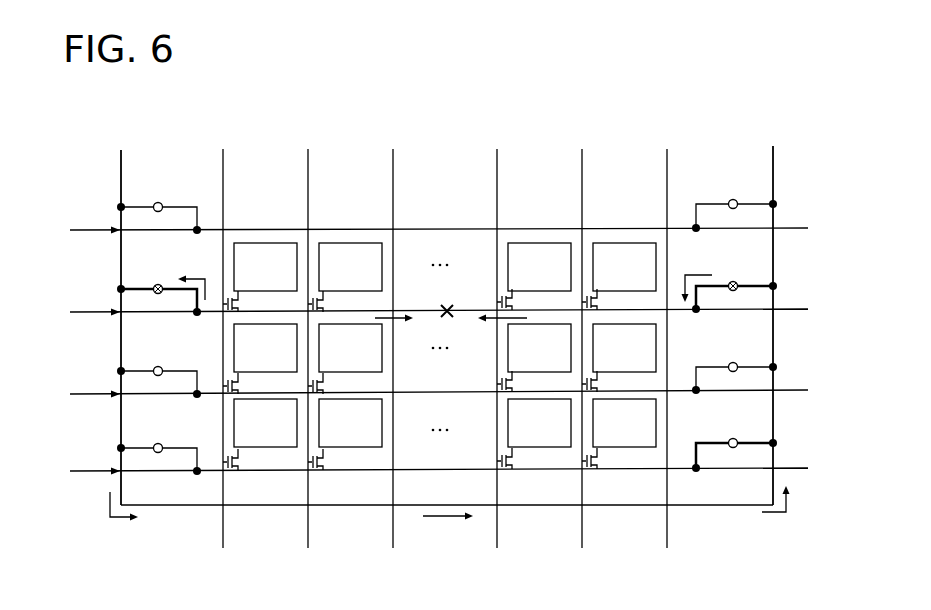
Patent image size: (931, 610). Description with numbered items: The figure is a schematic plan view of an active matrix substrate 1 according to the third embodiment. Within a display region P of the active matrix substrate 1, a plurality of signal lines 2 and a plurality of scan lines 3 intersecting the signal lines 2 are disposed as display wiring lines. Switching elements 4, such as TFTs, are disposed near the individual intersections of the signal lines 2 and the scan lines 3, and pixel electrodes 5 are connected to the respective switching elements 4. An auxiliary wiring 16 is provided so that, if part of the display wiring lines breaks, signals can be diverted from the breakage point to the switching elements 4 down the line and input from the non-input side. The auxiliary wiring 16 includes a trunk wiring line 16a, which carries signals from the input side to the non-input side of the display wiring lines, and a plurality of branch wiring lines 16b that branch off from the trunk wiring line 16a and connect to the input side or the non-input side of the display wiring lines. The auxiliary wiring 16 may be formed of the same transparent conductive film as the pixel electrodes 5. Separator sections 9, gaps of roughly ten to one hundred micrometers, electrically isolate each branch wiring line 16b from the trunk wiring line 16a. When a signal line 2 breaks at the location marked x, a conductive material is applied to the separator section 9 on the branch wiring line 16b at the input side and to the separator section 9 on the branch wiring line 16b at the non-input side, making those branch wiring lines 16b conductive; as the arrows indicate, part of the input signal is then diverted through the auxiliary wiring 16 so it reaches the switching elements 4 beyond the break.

The active matrix substrate 1 is at (730, 92).
The display region P is at (509, 101).
The signal line 2 is at (78, 228).
The scan line 3 is at (221, 153).
The switching element 4 is at (227, 378).
The pixel electrode 5 is at (233, 346).
The separator section 9 is at (157, 201).
The auxiliary wiring 16 is at (63, 121).
The trunk wiring line 16a is at (119, 154).
The branch wiring line 16b is at (133, 201).